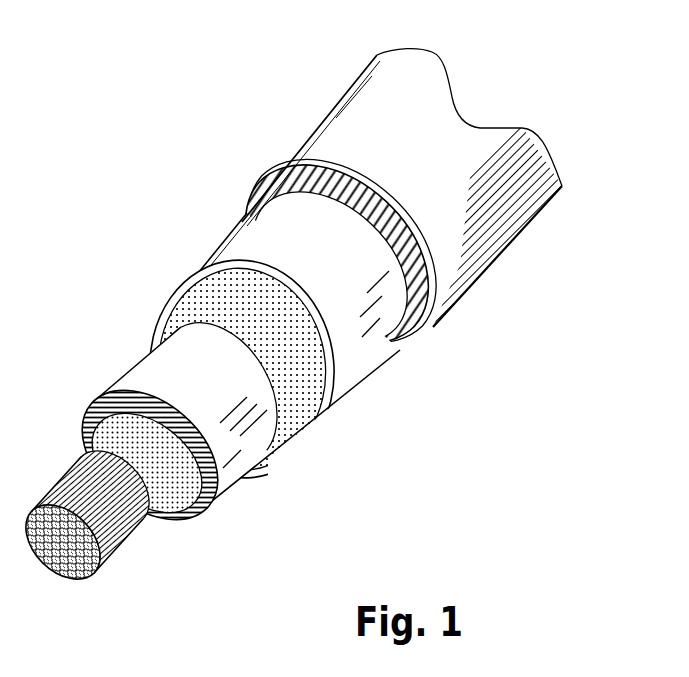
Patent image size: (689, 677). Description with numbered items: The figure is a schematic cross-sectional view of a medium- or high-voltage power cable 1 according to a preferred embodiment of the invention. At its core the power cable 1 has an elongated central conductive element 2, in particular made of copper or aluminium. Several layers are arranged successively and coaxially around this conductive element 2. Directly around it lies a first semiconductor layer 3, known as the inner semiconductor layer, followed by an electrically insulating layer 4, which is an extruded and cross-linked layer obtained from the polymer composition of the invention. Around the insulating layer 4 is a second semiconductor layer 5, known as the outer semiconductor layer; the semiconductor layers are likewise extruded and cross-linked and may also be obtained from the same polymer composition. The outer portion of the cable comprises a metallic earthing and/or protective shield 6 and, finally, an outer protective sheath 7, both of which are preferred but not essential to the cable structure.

The power cable 1 is at (176, 189).
The conductive element 2 is at (121, 538).
The first semiconductor layer 3 is at (188, 518).
The electrically insulating layer 4 is at (218, 438).
The second semiconductor layer 5 is at (360, 308).
The metallic earthing and/or protective shield 6 is at (367, 358).
The outer protective sheath 7 is at (440, 230).